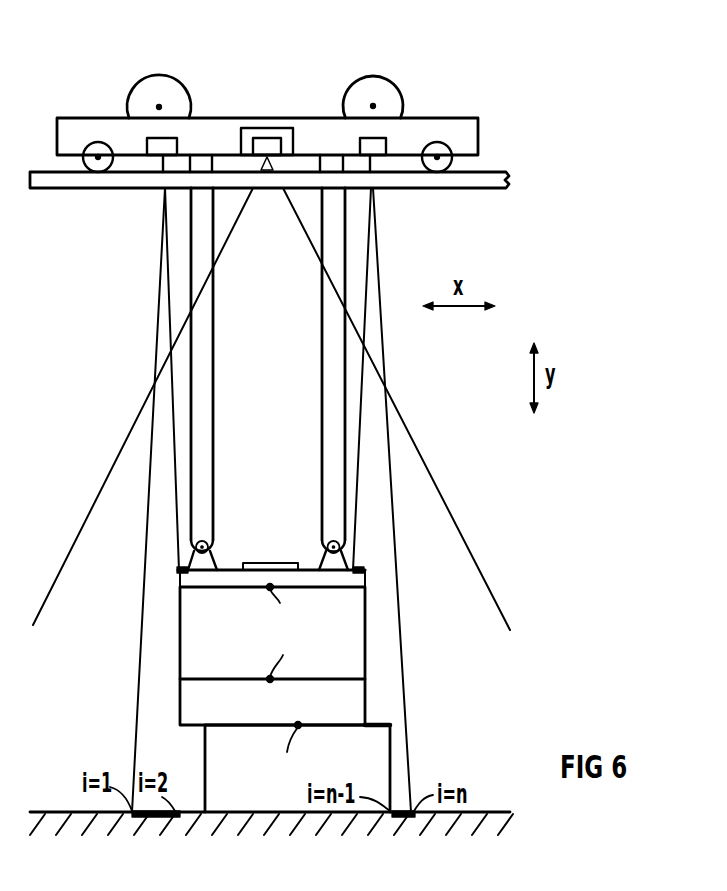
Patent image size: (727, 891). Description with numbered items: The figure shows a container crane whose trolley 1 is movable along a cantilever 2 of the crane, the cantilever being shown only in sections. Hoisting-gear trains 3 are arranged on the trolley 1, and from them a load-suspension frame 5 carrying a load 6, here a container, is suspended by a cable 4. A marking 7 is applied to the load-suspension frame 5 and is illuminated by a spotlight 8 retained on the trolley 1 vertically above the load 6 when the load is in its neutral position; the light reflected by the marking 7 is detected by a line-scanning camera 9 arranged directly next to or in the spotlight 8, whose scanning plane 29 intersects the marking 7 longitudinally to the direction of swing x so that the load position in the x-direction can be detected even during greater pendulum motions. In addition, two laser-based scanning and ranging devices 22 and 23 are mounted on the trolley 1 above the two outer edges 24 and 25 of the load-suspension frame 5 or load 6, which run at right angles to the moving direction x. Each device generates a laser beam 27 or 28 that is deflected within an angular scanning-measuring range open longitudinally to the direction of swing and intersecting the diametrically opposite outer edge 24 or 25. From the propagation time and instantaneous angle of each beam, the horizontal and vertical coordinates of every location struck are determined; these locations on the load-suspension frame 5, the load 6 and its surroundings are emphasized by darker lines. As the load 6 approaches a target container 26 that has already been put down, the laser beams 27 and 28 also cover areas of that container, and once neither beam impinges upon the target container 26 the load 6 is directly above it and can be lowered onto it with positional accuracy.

The trolley 1 is at (478, 133).
The cantilever 2 is at (485, 188).
The hoisting-gear trains 3 is at (143, 93).
The cable 4 is at (322, 378).
The load-suspension frame 5 is at (358, 582).
The load 6 is at (366, 628).
The marking 7 is at (270, 563).
The spotlight 8 is at (255, 130).
The line-scanning camera 9 is at (275, 143).
The laser-based scanning and ranging device 22 is at (148, 144).
The laser-based scanning and ranging device 23 is at (387, 143).
The outer edge 24 is at (177, 572).
The outer edge 25 is at (366, 570).
The target container 26 is at (392, 765).
The laser beam 27 is at (137, 700).
The laser beam 28 is at (405, 702).
The scanning plane 29 is at (414, 440).